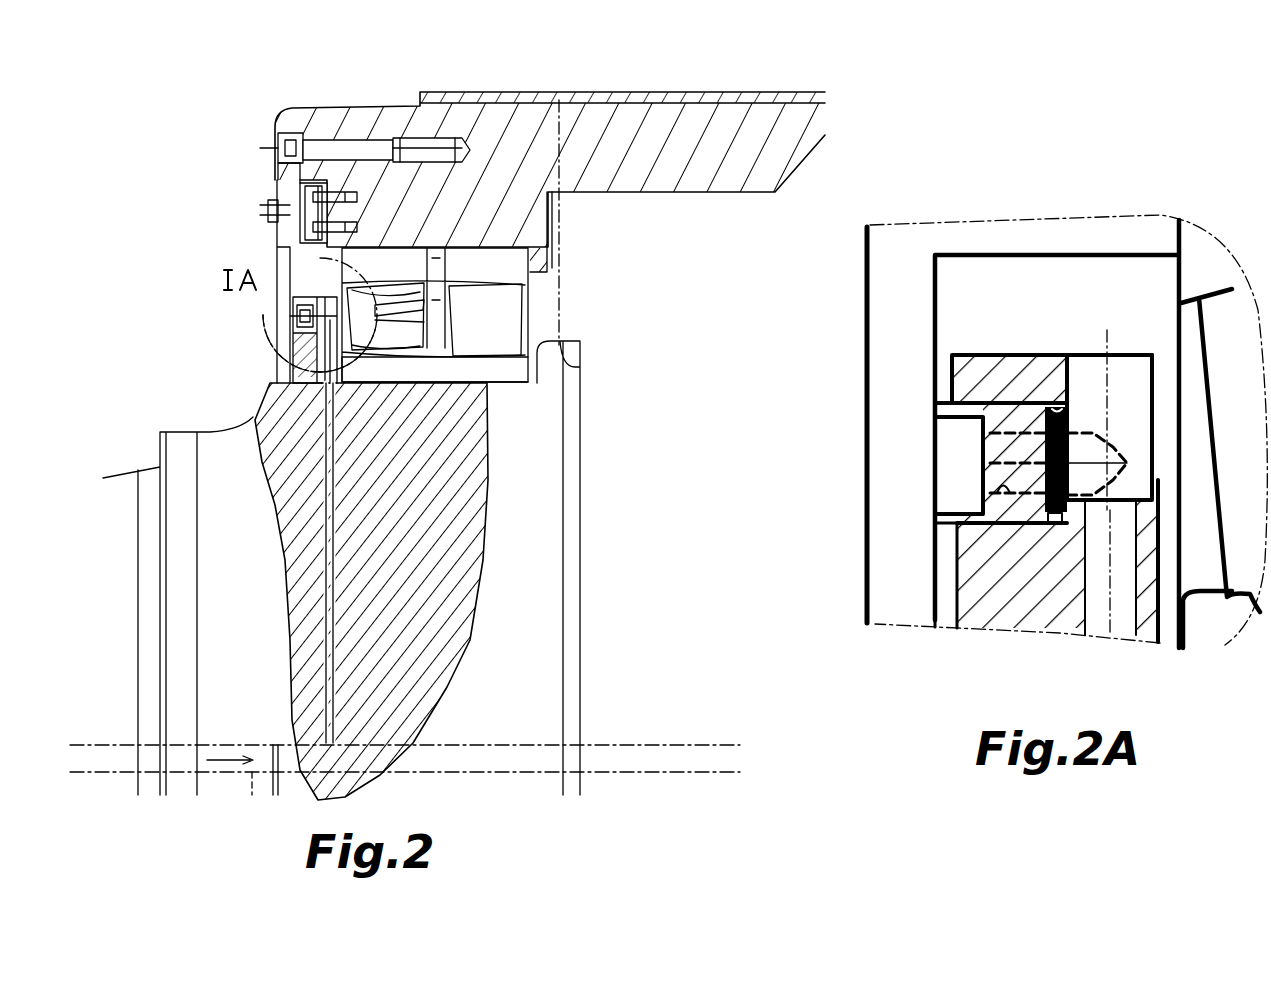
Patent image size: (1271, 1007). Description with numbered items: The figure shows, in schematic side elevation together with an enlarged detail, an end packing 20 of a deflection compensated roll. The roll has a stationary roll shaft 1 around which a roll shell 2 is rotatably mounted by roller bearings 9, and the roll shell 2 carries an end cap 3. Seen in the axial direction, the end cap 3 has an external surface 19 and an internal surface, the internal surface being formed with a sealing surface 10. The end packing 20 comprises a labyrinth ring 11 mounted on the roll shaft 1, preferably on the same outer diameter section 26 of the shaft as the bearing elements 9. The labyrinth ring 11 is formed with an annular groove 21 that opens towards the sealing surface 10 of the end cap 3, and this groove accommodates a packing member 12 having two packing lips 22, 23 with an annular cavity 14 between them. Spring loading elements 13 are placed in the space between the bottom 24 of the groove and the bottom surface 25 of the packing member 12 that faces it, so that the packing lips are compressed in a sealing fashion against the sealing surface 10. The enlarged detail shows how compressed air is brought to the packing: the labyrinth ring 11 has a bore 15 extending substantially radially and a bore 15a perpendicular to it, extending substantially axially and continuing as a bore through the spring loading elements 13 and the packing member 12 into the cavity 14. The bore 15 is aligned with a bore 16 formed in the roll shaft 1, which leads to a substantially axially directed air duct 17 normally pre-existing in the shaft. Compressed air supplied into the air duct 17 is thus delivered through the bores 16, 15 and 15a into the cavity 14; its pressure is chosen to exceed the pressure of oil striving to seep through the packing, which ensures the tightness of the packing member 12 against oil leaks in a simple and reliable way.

In FIG. 2, the roll shaft 1 is at (212, 440).
In FIG. 2, the roll shell 2 is at (393, 113).
In FIG. 2, the end cap 3 is at (287, 247).
In FIG. 2, the roller bearings 9 is at (548, 286).
In FIG. 2A, the sealing surface 10 is at (945, 287).
In FIG. 2, the labyrinth ring 11 is at (290, 372).
In FIG. 2A, the labyrinth ring 11 is at (967, 607).
In FIG. 2A, the packing member 12 is at (955, 428).
In FIG. 2A, the spring loading elements 13 is at (1047, 403).
In FIG. 2A, the annular cavity 14 is at (945, 452).
In FIG. 2, the bore 15 is at (348, 375).
In FIG. 2A, the bore 15 is at (1130, 547).
In FIG. 2A, the bore 15a is at (997, 493).
In FIG. 2, the bore 16 is at (322, 478).
In FIG. 2, the air duct 17 is at (405, 770).
In FIG. 2, the external surface 19 is at (278, 255).
In FIG. 2A, the external surface 19 is at (865, 292).
In FIG. 2, the end packing 20 is at (348, 303).
In FIG. 2A, the end packing 20 is at (1195, 426).
In FIG. 2A, the annular groove 21 is at (1072, 418).
In FIG. 2A, the packing lip 22 is at (935, 412).
In FIG. 2A, the packing lip 23 is at (937, 520).
In FIG. 2A, the bottom of groove 24 is at (1047, 530).
In FIG. 2A, the bottom surface of packing member 25 is at (1050, 405).
In FIG. 2, the outer diameter section 26 is at (582, 342).